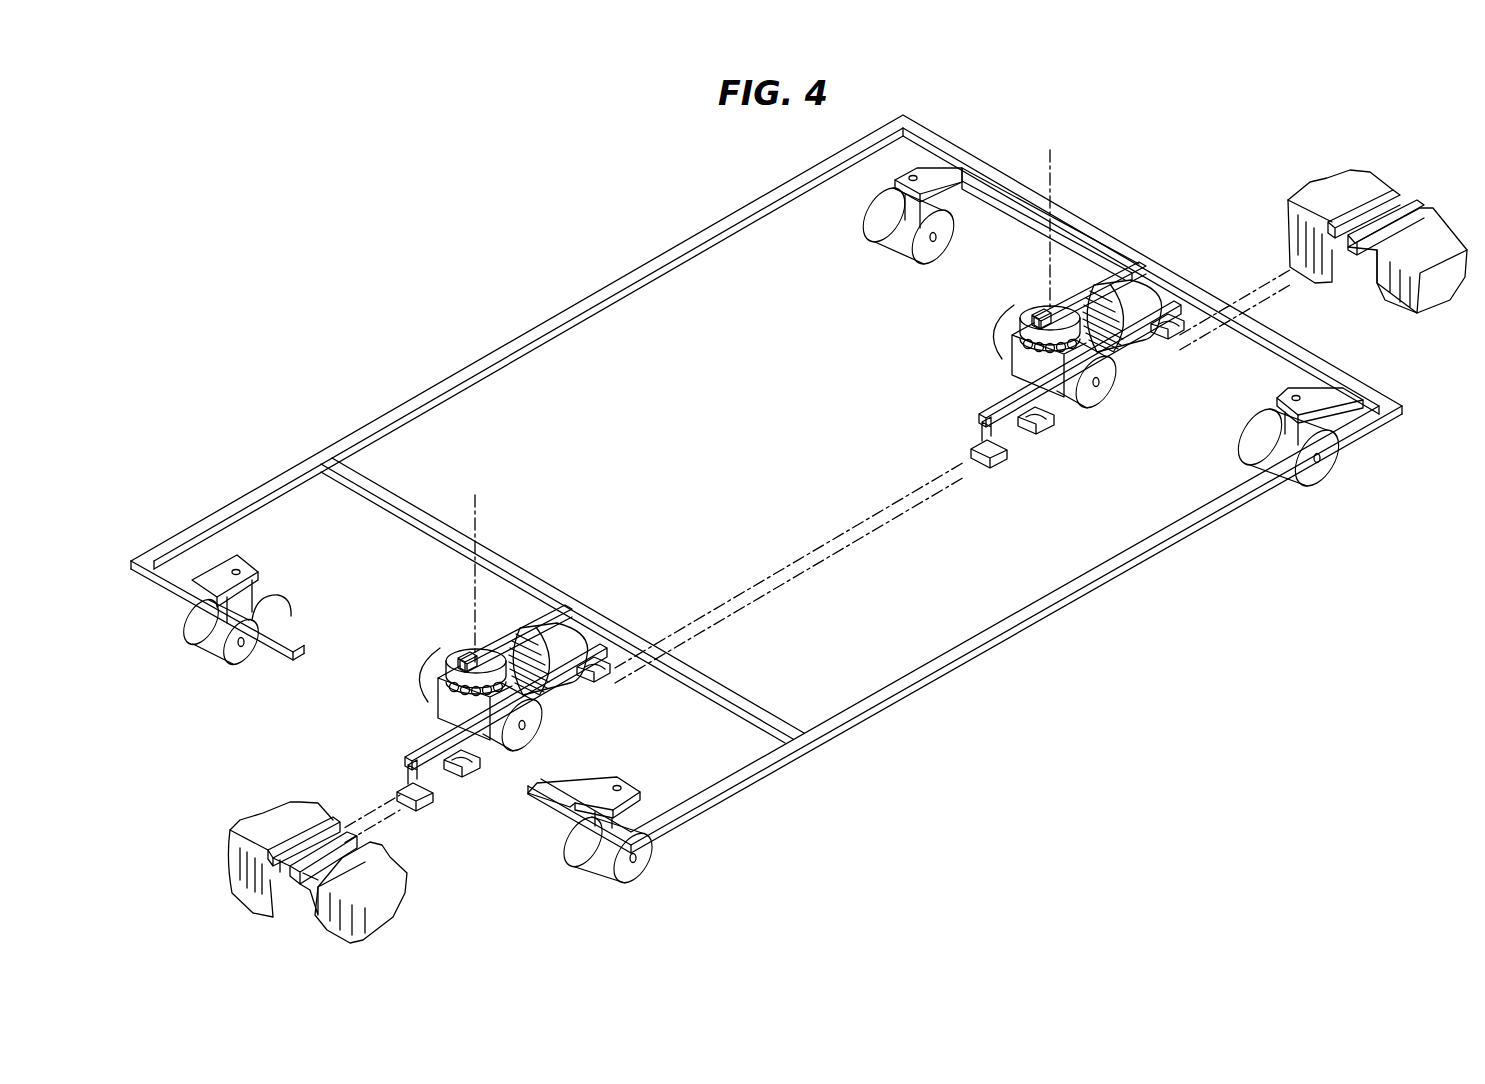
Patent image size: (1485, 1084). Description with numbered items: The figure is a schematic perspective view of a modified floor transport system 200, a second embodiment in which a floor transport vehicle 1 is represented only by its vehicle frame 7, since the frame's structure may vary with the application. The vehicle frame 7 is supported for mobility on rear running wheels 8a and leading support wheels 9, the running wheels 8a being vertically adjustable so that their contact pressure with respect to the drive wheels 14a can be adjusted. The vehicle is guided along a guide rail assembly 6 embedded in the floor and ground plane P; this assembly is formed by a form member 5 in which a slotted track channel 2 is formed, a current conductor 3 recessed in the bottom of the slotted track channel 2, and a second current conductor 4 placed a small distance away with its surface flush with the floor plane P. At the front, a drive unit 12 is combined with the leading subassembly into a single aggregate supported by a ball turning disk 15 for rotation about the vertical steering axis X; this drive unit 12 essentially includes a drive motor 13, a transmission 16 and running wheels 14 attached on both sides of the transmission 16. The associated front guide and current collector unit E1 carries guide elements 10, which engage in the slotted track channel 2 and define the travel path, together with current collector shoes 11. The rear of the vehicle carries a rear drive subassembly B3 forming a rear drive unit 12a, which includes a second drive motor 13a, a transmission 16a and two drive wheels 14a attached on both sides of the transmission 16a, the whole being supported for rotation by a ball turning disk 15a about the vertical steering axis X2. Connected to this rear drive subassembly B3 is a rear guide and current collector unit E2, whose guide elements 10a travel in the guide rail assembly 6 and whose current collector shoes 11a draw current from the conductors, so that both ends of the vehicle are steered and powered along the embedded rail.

The floor transport vehicle 1 is at (966, 748).
The floor transport system 200 is at (703, 156).
The vehicle frame 7 is at (640, 257).
The running wheels 8a is at (872, 228).
The leading support wheels 9 is at (652, 860).
The guide rail assembly 6 is at (1420, 182).
The slotted track channel 2 is at (242, 850).
The current conductor 3 is at (305, 900).
The second current conductor 4 is at (330, 905).
The form member 5 is at (275, 885).
The floor and ground plane P is at (268, 825).
The guide elements 10 is at (420, 795).
The guide elements 10a is at (993, 458).
The current collector shoes 11 is at (604, 680).
The current collector shoes 11a is at (1048, 420).
The drive unit 12 is at (494, 721).
The rear drive unit 12a is at (1054, 382).
The drive motor 13 is at (566, 650).
The second drive motor 13a is at (1142, 308).
The running wheels 14 is at (440, 712).
The drive wheels 14a is at (1000, 370).
The ball turning disk 15 is at (462, 650).
The ball turning disk 15a is at (1040, 308).
The transmission 16 is at (446, 697).
The transmission 16a is at (1015, 352).
The vertical steering axis X is at (474, 564).
The vertical steering axis X2 is at (1049, 212).
The front guide and current collector unit E1 is at (588, 680).
The rear guide and current collector unit E2 is at (1003, 408).
The rear drive subassembly B3 is at (988, 300).